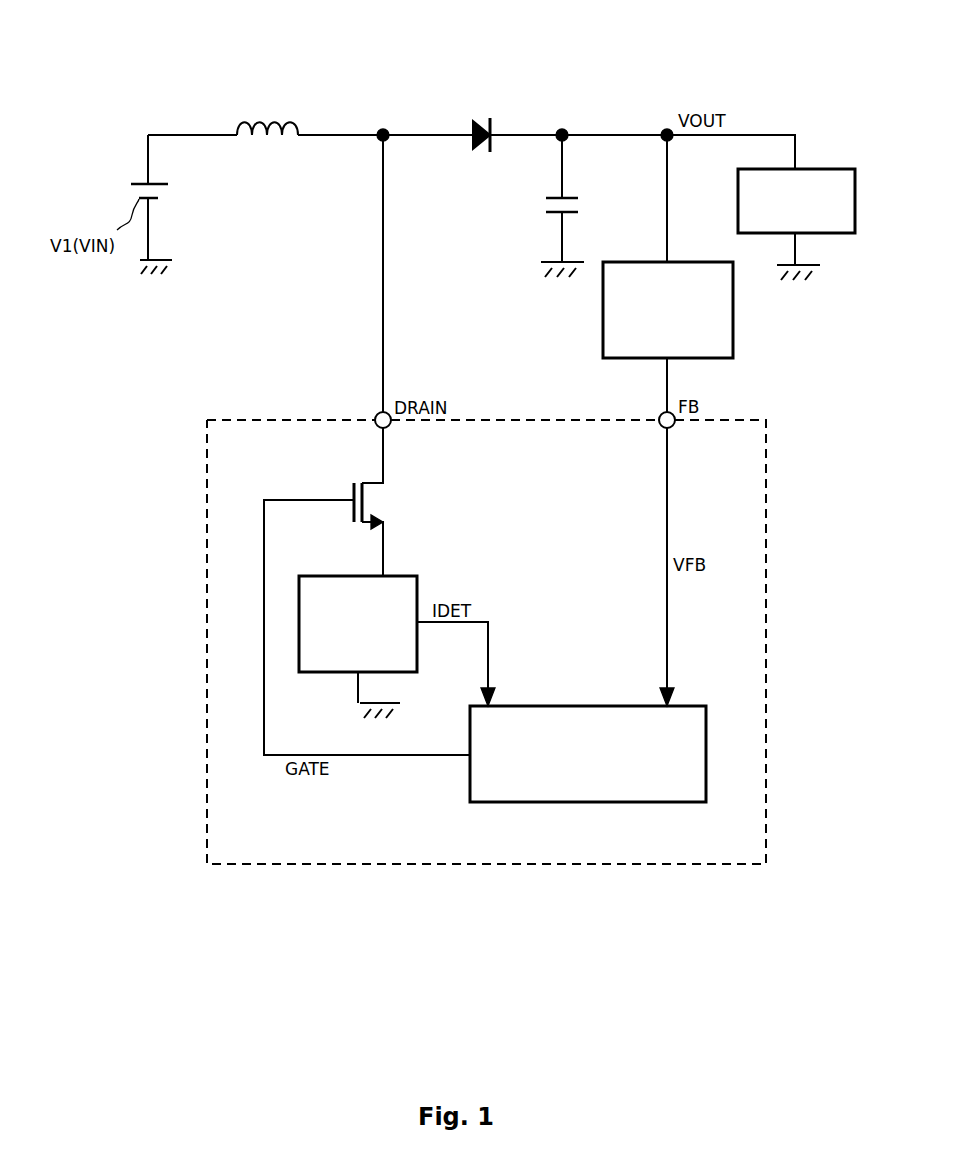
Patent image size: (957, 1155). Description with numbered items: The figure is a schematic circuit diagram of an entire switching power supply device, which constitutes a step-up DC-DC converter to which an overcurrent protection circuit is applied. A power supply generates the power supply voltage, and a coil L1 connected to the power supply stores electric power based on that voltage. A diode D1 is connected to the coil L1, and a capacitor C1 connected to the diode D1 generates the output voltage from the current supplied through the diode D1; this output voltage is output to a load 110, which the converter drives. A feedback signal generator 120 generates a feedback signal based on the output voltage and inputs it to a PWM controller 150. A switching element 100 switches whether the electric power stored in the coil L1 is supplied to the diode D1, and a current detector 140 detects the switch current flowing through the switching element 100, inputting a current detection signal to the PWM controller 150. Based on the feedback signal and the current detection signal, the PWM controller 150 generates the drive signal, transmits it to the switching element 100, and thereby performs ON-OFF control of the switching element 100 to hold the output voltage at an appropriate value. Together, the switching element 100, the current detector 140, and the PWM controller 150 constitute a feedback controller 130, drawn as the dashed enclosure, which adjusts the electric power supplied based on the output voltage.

The switching element 100 is at (357, 487).
The load 110 is at (808, 167).
The feedback signal generator 120 is at (622, 261).
The feedback controller 130 is at (226, 419).
The current detector 140 is at (400, 575).
The PWM controller 150 is at (547, 705).
The coil L1 is at (247, 123).
The diode D1 is at (476, 120).
The capacitor C1 is at (574, 195).